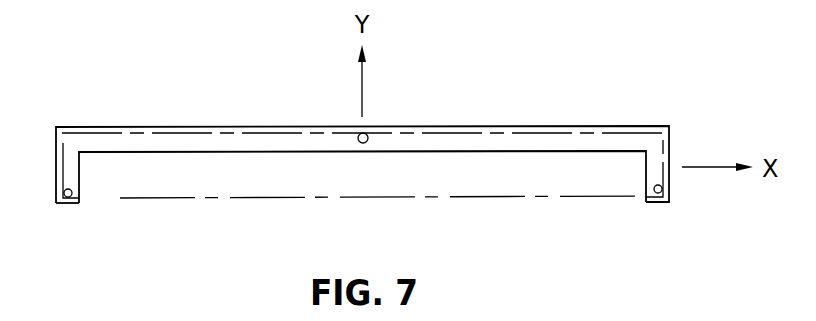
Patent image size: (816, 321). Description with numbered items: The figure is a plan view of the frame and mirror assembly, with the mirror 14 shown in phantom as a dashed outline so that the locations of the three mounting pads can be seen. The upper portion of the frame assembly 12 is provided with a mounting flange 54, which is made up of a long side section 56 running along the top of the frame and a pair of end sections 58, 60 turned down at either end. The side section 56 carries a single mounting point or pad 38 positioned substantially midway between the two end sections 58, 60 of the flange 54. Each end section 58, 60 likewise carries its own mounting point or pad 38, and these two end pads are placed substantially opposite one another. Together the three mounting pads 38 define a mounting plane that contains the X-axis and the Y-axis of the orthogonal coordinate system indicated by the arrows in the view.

The frame assembly 12 is at (167, 116).
The panel 14 is at (252, 198).
The mounting point or pad 38 is at (69, 189).
The mounting flange 54 is at (509, 127).
The side section 56 is at (222, 152).
The end section 58 is at (77, 191).
The end section 60 is at (654, 189).